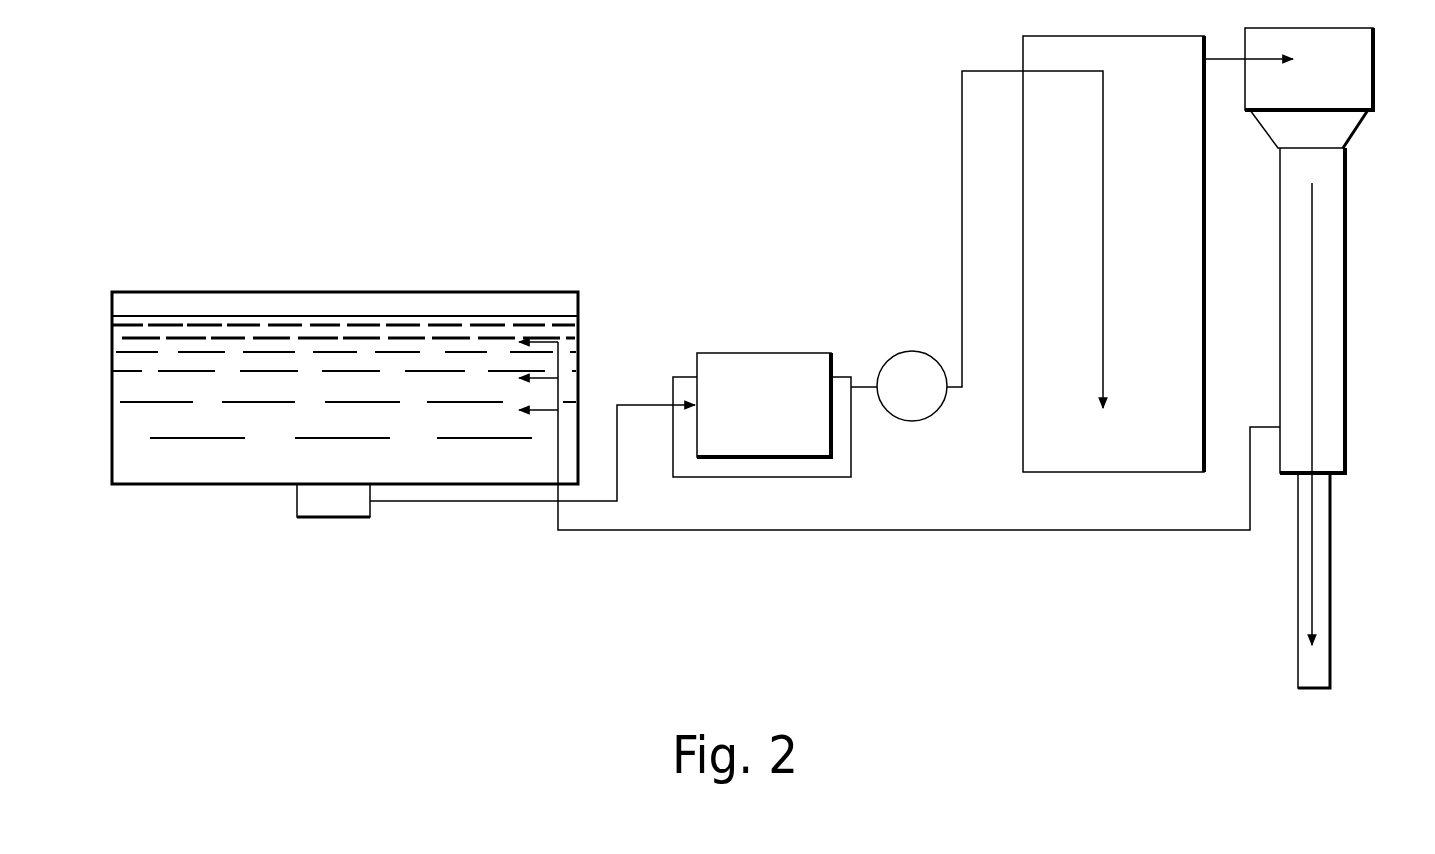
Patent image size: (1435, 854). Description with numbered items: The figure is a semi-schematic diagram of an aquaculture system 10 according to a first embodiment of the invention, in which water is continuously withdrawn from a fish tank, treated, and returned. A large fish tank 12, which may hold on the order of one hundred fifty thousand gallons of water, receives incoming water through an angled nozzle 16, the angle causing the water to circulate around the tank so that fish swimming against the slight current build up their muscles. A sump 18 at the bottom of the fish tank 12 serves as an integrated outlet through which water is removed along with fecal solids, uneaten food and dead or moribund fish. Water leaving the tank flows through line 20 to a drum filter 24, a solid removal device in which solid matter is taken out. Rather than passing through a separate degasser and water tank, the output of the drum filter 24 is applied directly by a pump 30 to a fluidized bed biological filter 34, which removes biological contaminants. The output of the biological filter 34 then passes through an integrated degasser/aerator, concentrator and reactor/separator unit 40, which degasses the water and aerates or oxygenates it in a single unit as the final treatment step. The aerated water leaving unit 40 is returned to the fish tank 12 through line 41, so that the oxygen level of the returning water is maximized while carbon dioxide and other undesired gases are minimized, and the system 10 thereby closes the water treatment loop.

The system 10 is at (792, 148).
The fish tank 12 is at (195, 287).
The angled nozzle 16 is at (548, 410).
The sump 18 is at (342, 518).
The line 20 is at (618, 468).
The drum filter 24 is at (778, 418).
The pump 30 is at (916, 421).
The fluidized bed biological filter 34 is at (1023, 448).
The integrated degasser/aerator, concentrator and reactor/separator unit 40 is at (1368, 255).
The line 41 is at (1087, 531).